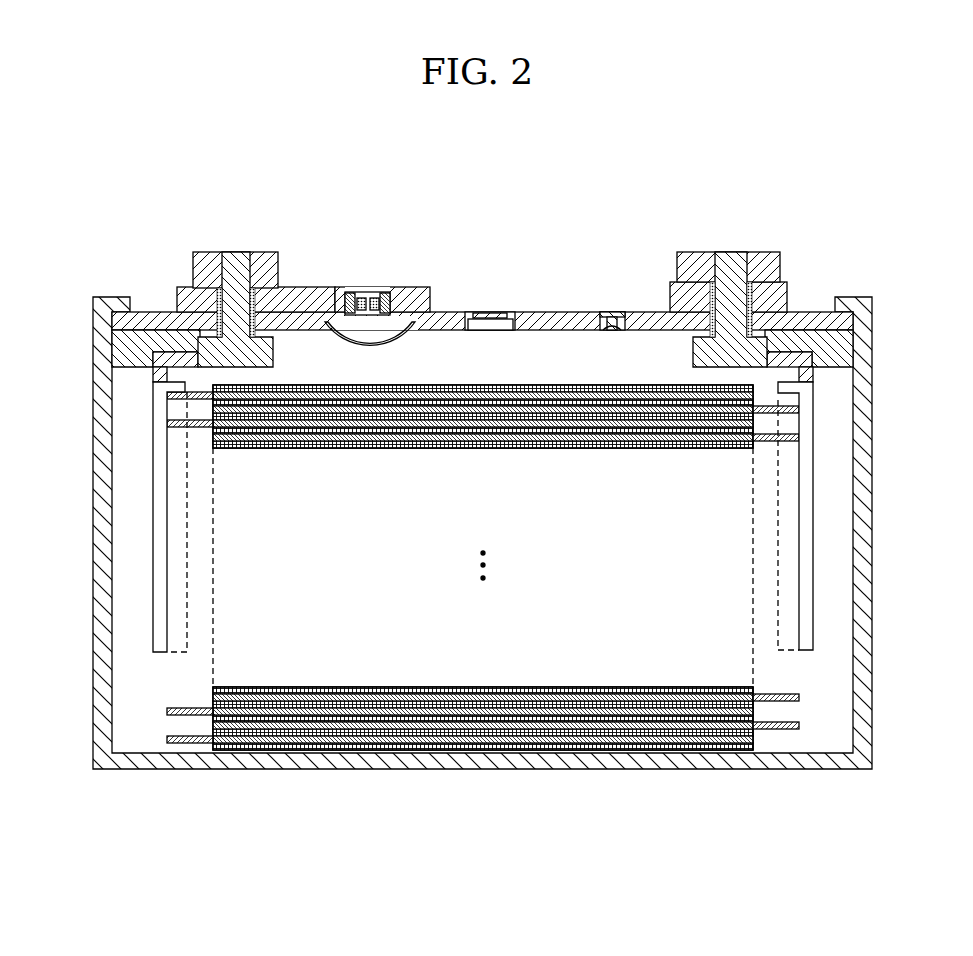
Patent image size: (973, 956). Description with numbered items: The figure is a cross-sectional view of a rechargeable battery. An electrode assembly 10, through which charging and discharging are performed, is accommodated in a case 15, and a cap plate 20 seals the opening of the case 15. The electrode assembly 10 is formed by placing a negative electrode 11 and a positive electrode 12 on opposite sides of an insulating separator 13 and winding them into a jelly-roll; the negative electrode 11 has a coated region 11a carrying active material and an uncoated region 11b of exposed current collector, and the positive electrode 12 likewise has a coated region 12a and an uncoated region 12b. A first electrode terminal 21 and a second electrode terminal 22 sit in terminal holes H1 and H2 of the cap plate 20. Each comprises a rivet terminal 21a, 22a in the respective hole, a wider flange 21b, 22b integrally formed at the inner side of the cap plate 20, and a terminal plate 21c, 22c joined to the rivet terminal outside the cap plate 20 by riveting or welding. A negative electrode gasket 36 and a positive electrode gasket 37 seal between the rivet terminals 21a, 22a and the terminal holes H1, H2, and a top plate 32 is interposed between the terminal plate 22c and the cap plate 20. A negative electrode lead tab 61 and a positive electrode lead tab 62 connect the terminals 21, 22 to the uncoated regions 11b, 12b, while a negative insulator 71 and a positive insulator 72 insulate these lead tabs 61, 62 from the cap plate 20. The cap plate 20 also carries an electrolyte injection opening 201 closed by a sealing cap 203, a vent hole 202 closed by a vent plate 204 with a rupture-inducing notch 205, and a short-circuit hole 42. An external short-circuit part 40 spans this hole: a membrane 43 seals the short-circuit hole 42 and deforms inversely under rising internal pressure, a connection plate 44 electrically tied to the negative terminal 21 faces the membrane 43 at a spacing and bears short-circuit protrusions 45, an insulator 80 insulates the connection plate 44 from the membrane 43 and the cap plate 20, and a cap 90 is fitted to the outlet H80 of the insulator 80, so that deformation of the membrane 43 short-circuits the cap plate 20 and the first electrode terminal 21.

The electrode assembly 10 is at (488, 626).
The negative electrode 11 is at (460, 630).
The coated region 11a is at (300, 750).
The uncoated region 11b is at (190, 606).
The positive electrode 12 is at (511, 637).
The coated region 12a is at (688, 724).
The uncoated region 12b is at (781, 613).
The separator 13 is at (497, 743).
The case 15 is at (858, 478).
The cap plate 20 is at (570, 320).
The electrolyte injection opening 201 is at (612, 332).
The vent hole 202 is at (487, 330).
The sealing cap 203 is at (616, 384).
The vent plate 204 is at (507, 313).
The notch 205 is at (494, 376).
The first electrode terminal 21 is at (167, 342).
The rivet terminal 21a is at (237, 367).
The flange 21b is at (158, 352).
The terminal plate 21c is at (260, 252).
The second electrode terminal 22 is at (798, 338).
The rivet terminal 22a is at (815, 398).
The flange 22b is at (703, 367).
The terminal plate 22c is at (765, 262).
The top plate 32 is at (780, 297).
The negative electrode gasket 36 is at (200, 318).
The positive electrode gasket 37 is at (703, 290).
The external short-circuit part 40 is at (371, 383).
The short-circuit hole 42 is at (398, 316).
The membrane 43 is at (340, 316).
The connection plate 44 is at (188, 288).
The short-circuit protrusions 45 is at (365, 345).
The negative electrode lead tab 61 is at (150, 490).
The positive electrode lead tab 62 is at (815, 620).
The negative insulator 71 is at (128, 347).
The positive insulator 72 is at (840, 350).
The insulator 80 is at (384, 353).
The cap 90 is at (367, 300).
The terminal hole H1 is at (228, 296).
The terminal hole H2 is at (745, 300).
The outlet H80 is at (367, 318).